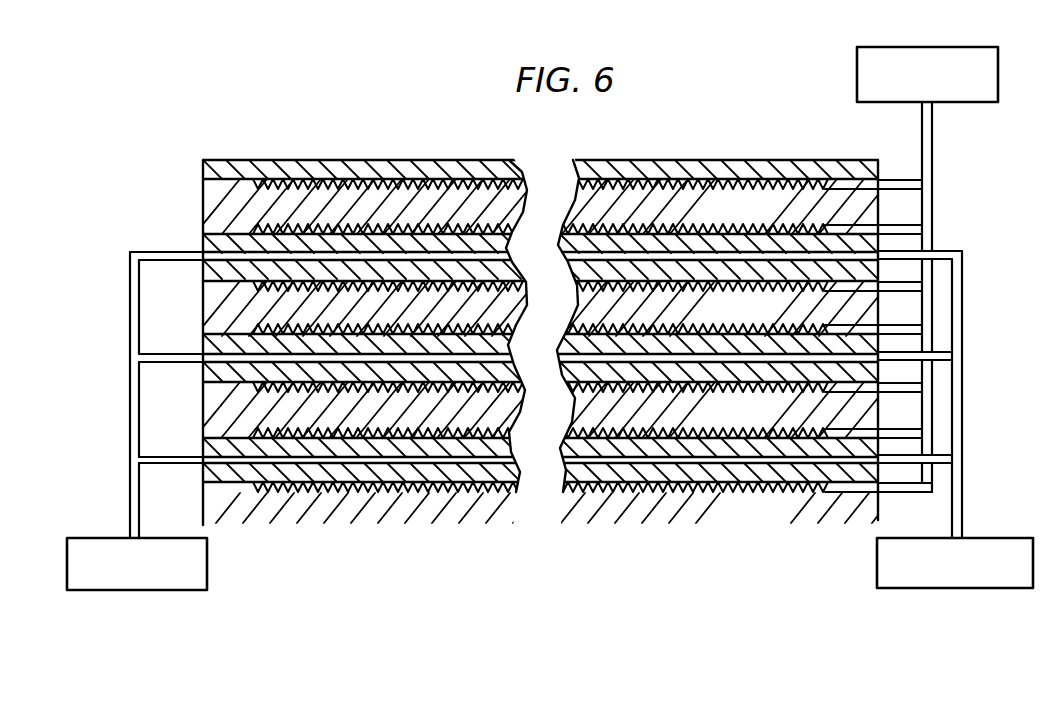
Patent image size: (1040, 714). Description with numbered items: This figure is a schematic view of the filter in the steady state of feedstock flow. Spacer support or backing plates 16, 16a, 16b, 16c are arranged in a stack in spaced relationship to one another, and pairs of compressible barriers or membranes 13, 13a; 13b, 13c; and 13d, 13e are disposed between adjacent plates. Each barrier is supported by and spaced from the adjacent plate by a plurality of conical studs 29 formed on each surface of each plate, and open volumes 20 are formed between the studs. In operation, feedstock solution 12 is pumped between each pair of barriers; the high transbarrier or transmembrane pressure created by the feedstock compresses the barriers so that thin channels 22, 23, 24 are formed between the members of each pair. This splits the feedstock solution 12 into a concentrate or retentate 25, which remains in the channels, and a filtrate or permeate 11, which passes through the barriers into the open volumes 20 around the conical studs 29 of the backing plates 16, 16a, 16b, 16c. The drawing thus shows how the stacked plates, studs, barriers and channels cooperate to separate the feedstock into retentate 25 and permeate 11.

The filtrate or permeate 11 is at (927, 269).
The feedstock solution 12 is at (137, 421).
The compressible barrier or membrane 13 is at (213, 246).
The compressible barrier or membrane 13a is at (222, 278).
The compressible barrier or membrane 13b is at (212, 344).
The compressible barrier or membrane 13c is at (230, 373).
The compressible barrier or membrane 13d is at (211, 447).
The compressible barrier or membrane 13e is at (222, 473).
The spacer support or backing plate 16 is at (558, 206).
The spacer support or backing plate 16a is at (558, 308).
The spacer support or backing plate 16b is at (558, 410).
The spacer support or backing plate 16c is at (567, 504).
The open volume 20 is at (462, 162).
The thin channel 22 is at (238, 257).
The thin channel 23 is at (236, 358).
The thin channel 24 is at (221, 458).
The concentrate or retentate 25 is at (955, 419).
The conical stud 29 is at (432, 178).